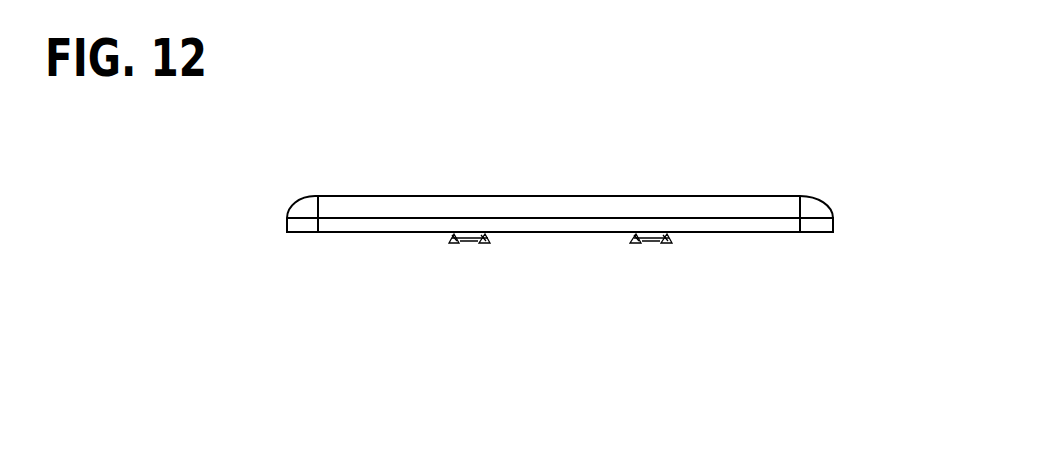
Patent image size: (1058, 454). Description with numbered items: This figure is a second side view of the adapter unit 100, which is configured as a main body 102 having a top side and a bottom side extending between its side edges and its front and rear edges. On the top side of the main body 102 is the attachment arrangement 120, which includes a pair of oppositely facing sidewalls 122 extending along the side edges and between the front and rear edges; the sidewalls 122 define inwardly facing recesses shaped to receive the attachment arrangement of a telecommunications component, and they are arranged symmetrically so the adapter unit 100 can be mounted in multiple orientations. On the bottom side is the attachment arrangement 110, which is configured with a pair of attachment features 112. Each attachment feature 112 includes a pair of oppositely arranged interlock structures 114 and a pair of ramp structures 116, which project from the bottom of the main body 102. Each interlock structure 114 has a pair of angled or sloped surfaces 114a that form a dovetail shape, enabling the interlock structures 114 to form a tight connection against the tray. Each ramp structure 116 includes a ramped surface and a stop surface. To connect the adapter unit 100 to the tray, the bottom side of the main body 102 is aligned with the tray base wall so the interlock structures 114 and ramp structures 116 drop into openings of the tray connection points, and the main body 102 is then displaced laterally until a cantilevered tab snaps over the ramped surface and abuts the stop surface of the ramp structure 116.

The adapter unit 100 is at (277, 183).
The main body 102 is at (806, 225).
The attachment arrangement 110 is at (435, 256).
The attachment features 112 is at (428, 242).
The interlock structures 114 is at (481, 237).
The sloped surfaces 114a is at (457, 240).
The ramp structures 116 is at (469, 237).
The attachment arrangement 120 is at (383, 183).
The sidewalls 122 is at (763, 203).